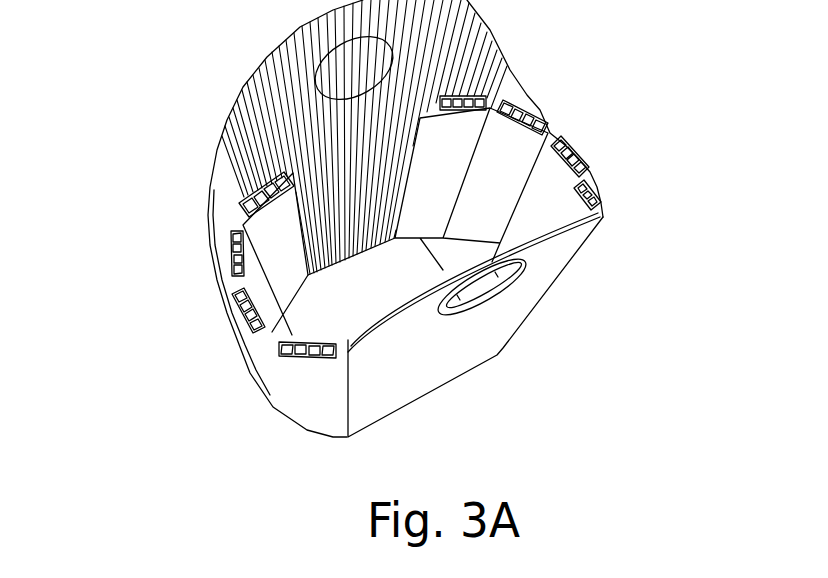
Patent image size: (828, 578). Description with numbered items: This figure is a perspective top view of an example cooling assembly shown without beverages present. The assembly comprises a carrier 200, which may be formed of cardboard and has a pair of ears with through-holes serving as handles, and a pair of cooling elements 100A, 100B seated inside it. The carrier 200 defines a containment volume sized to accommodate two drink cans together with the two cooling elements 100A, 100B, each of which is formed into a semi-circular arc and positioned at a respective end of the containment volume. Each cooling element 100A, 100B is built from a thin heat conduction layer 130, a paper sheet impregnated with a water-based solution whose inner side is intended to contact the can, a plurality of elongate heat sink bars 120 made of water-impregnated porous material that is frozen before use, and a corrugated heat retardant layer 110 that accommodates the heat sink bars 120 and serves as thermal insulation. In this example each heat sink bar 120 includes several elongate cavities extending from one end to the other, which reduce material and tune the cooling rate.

The cooling element 100A is at (533, 97).
The cooling element 100B is at (210, 257).
The heat retardant layer 110 is at (563, 128).
The heat sink bars 120 is at (547, 110).
The heat conduction layer 130 is at (557, 164).
The carrier 200 is at (557, 262).